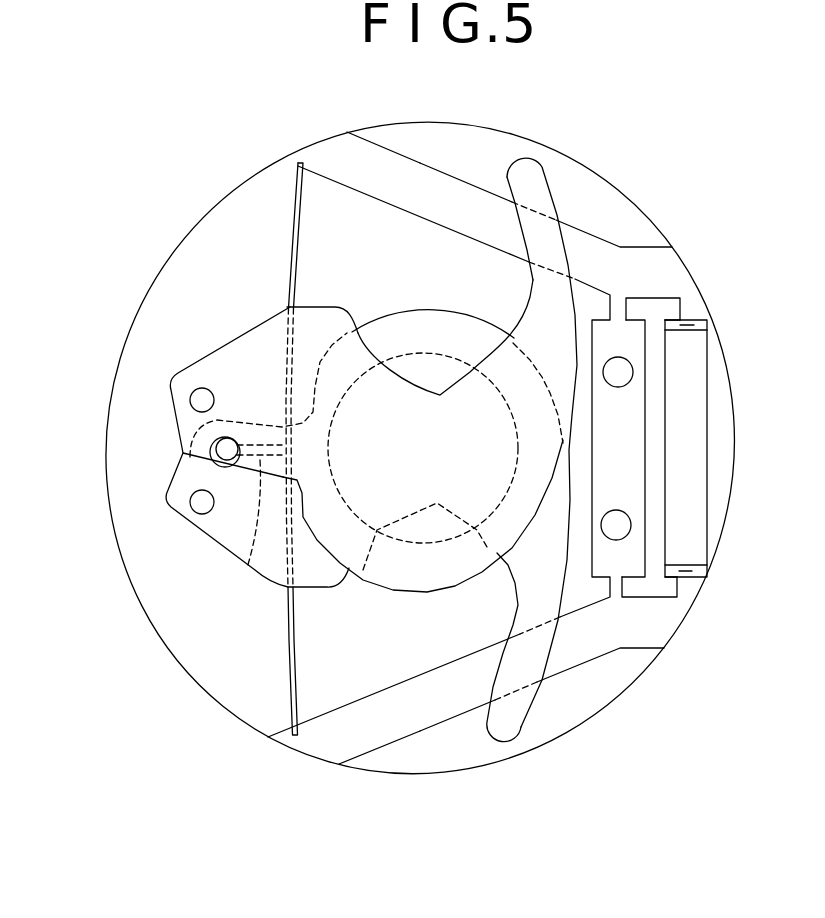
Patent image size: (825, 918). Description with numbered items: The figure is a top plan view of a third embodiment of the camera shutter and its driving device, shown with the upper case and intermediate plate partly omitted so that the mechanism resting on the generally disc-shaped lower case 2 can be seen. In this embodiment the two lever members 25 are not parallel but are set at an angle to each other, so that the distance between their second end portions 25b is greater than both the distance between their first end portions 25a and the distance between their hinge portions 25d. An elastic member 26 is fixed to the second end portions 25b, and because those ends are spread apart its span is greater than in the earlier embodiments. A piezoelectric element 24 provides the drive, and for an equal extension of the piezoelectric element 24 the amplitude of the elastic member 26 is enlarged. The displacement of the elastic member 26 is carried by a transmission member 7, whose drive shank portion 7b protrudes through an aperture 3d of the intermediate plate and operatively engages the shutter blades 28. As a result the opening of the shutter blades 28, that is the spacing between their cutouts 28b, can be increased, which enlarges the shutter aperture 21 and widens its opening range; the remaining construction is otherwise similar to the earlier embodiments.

The lower case 2 is at (620, 192).
The aperture of intermediate plate 3d is at (195, 393).
The transmission member 7 is at (247, 560).
The drive shank portion 7b is at (218, 452).
The shutter aperture 21 is at (512, 458).
The piezoelectric element 24 is at (698, 436).
The lever members 25 is at (418, 163).
The first end portions of lever members 25a is at (675, 284).
The second end portions of lever members 25b is at (342, 162).
The hinge portions of lever members 25d is at (628, 312).
The elastic member 26 is at (292, 245).
The shutter blades 28 is at (339, 311).
The cutouts of shutter blades 28b is at (491, 350).